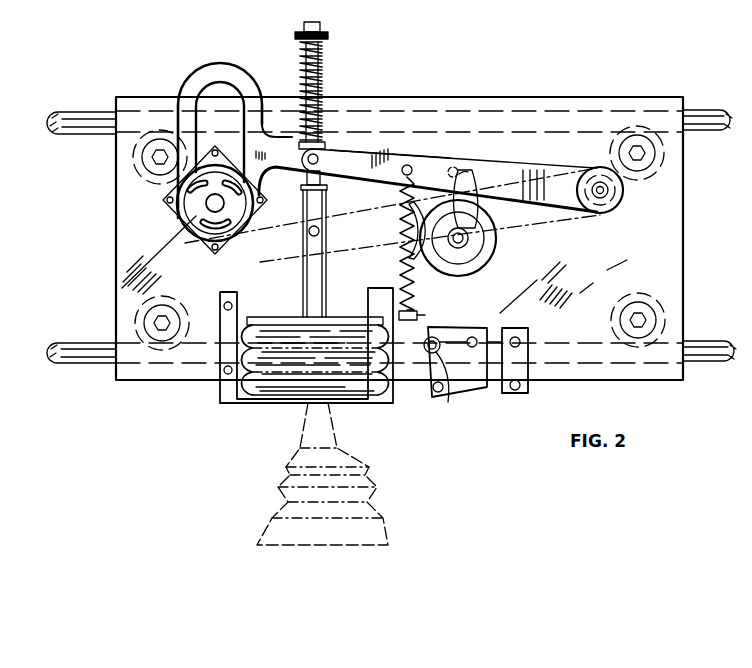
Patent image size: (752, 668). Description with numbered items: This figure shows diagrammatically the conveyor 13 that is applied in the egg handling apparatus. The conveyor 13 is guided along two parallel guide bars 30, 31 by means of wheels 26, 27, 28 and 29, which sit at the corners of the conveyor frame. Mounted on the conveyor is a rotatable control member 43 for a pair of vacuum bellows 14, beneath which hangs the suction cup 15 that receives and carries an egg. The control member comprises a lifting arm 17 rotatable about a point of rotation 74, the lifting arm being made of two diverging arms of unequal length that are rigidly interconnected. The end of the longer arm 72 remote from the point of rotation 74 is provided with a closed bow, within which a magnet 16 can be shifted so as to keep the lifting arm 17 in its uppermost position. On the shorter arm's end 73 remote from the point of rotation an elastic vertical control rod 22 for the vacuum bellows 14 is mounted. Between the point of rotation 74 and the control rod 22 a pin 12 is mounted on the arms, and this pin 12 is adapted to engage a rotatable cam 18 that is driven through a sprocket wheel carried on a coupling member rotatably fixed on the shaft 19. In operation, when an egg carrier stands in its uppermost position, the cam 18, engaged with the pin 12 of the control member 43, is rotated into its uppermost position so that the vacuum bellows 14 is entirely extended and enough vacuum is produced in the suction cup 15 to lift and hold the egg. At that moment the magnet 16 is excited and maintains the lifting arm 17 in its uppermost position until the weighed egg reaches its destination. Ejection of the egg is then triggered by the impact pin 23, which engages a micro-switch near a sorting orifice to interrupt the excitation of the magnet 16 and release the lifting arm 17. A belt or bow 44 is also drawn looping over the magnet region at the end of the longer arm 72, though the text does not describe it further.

The pin 12 is at (454, 168).
The conveyor 13 is at (550, 143).
The vacuum bellows 14 is at (272, 385).
The suction cup 15 is at (347, 457).
The magnet 16 is at (192, 212).
The lifting arm 17 is at (337, 142).
The cam 18 is at (472, 218).
The shaft 19 is at (462, 240).
The control rod 22 is at (322, 60).
The impact pin 23 is at (447, 392).
The wheel 26 is at (140, 308).
The wheel 27 is at (140, 177).
The wheel 28 is at (686, 176).
The wheel 29 is at (660, 302).
The guide bar 30 is at (90, 122).
The guide bar 31 is at (89, 356).
The control member 43 is at (398, 144).
The drive belt 44 is at (207, 78).
The longer arm 72 is at (280, 153).
The shorter arm's end 73 is at (350, 163).
The point of rotation 74 is at (600, 186).